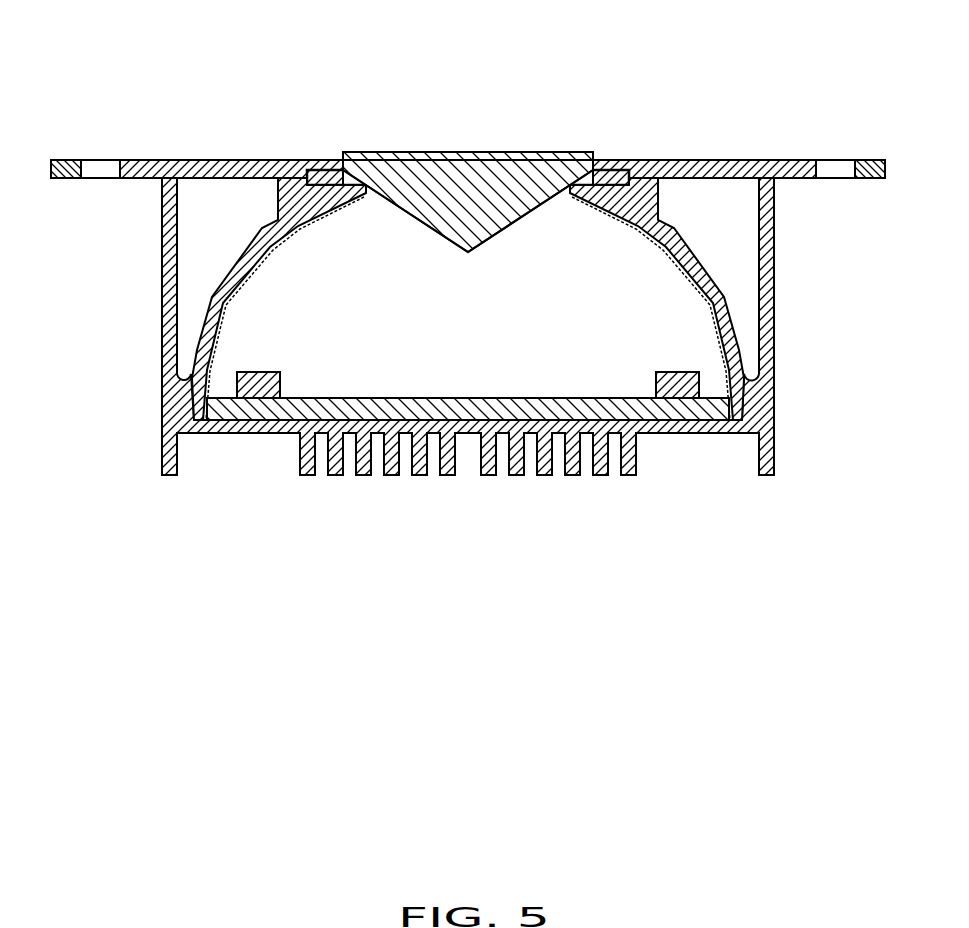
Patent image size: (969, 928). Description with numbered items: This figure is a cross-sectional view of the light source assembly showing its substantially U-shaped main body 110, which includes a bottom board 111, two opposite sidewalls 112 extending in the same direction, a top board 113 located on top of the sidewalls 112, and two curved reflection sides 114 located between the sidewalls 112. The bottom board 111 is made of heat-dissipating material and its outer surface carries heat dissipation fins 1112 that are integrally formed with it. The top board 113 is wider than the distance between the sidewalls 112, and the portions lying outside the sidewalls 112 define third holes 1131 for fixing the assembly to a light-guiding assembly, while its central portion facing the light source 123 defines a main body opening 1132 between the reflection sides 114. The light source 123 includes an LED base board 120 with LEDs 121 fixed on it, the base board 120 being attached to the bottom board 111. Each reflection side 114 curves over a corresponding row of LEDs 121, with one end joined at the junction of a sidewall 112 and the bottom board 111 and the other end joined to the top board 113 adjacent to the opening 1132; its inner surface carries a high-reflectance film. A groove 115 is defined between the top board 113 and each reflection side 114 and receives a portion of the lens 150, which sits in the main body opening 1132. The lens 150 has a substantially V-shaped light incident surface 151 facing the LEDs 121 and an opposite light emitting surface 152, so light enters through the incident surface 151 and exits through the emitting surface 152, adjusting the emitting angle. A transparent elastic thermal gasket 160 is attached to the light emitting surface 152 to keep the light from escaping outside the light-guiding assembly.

The main body 110 is at (465, 299).
The bottom board 111 is at (648, 420).
The heat dissipation fin 1112 is at (603, 470).
The sidewall 112 is at (773, 292).
The top board 113 is at (468, 120).
The third hole 1131 is at (100, 160).
The main body opening 1132 is at (342, 152).
The reflection side 114 is at (697, 258).
The groove 115 is at (526, 243).
The LED base board 120 is at (717, 407).
The LED 121 is at (678, 385).
The light source 123 is at (498, 475).
The lens 150 is at (481, 130).
The light incident surface 151 is at (516, 232).
The light emitting surface 152 is at (583, 142).
The thermal gasket 160 is at (433, 152).